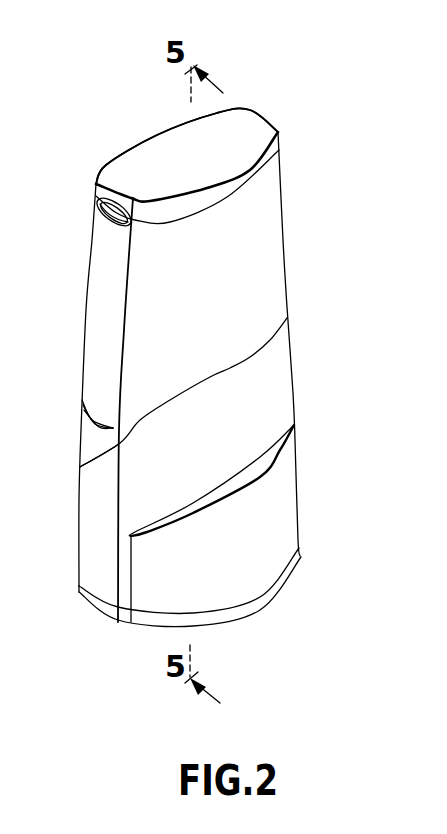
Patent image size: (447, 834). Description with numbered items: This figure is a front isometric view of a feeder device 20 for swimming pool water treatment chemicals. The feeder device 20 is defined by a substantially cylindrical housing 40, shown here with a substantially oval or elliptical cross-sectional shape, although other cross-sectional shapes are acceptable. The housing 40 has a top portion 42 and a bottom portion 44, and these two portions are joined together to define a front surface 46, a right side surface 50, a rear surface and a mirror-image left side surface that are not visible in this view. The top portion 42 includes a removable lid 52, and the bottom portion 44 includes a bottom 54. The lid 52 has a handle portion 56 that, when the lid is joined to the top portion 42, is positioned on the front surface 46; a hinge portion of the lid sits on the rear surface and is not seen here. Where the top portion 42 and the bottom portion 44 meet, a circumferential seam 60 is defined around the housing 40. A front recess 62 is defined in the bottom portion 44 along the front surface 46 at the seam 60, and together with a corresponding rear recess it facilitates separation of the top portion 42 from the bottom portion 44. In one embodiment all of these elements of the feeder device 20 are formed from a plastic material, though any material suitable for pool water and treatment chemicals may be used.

The feeder device 20 is at (311, 113).
The housing 40 is at (317, 173).
The top portion 42 is at (285, 220).
The bottom portion 44 is at (293, 392).
The front surface 46 is at (93, 288).
The right side surface 50 is at (277, 295).
The removable lid 52 is at (217, 111).
The bottom 54 is at (250, 610).
The handle portion 56 is at (97, 199).
The circumferential seam 60 is at (81, 466).
The front recess 62 is at (81, 431).